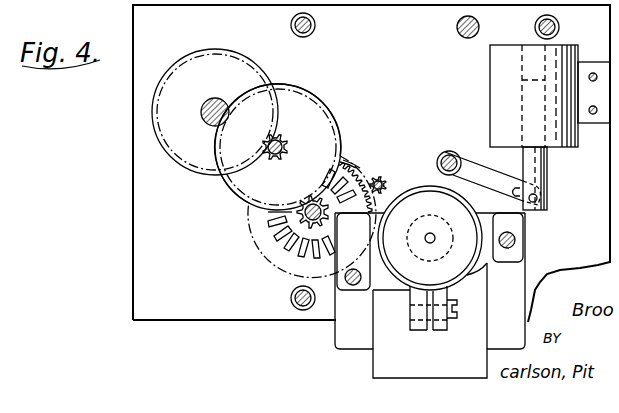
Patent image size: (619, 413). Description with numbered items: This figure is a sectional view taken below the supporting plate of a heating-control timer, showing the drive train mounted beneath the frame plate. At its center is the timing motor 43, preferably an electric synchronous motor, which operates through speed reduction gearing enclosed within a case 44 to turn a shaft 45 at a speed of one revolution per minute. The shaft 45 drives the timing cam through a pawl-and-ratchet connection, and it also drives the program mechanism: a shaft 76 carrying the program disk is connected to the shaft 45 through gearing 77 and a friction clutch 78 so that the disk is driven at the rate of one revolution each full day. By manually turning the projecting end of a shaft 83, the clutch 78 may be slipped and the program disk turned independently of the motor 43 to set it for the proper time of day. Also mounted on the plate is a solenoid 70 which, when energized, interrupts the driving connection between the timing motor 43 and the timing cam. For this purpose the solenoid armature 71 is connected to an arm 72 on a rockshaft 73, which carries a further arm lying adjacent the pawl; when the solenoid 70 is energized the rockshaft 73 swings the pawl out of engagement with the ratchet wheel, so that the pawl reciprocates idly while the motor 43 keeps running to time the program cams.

The timing motor 43 is at (365, 353).
The case 44 is at (418, 202).
The shaft 45 is at (436, 238).
The solenoid 70 is at (497, 96).
The solenoid armature 71 is at (546, 164).
The arm 72 is at (485, 176).
The rockshaft 73 is at (449, 150).
The shaft 76 is at (212, 126).
The gearing 77 is at (228, 203).
The friction clutch 78 is at (353, 151).
The shaft 83 is at (307, 199).